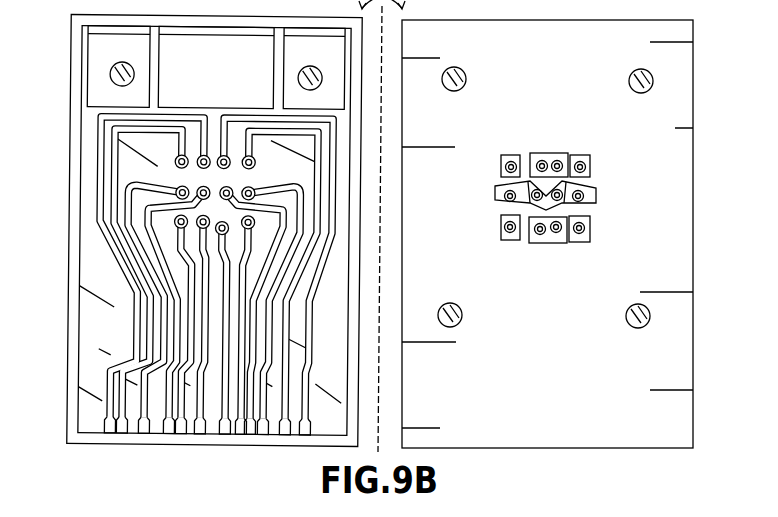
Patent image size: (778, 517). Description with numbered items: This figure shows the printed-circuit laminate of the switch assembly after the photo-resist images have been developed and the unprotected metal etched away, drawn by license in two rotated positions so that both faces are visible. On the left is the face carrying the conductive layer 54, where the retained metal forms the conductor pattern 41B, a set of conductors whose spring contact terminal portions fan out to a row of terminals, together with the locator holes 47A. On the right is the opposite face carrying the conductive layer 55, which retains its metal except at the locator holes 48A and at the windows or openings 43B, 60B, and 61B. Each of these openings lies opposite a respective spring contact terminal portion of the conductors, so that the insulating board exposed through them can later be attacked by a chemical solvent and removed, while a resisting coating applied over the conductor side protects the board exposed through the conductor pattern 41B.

The conductive layer 54 is at (92, 48).
The locator holes 47A is at (112, 80).
The conductor pattern 41B is at (179, 157).
The conductive layer 55 is at (692, 33).
The locator holes 48A is at (653, 80).
The window or opening 43B is at (578, 156).
The window or opening 60B is at (495, 195).
The window or opening 61B is at (576, 243).